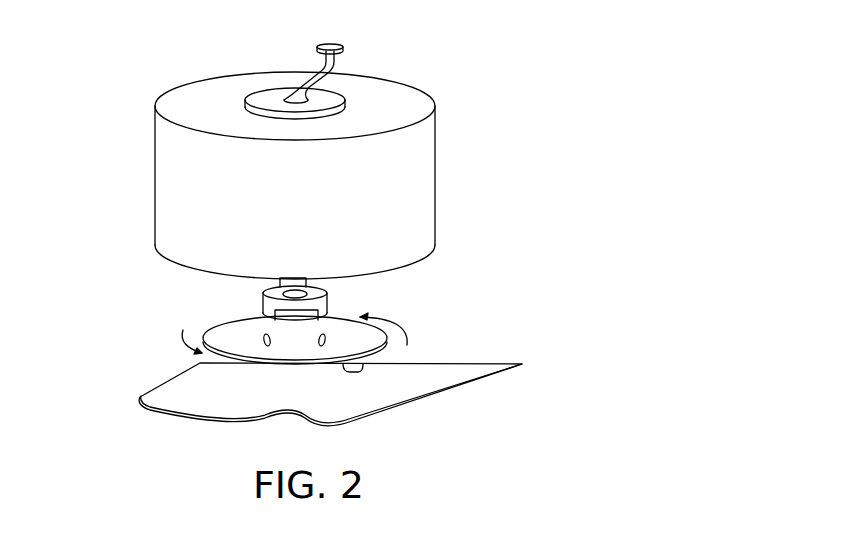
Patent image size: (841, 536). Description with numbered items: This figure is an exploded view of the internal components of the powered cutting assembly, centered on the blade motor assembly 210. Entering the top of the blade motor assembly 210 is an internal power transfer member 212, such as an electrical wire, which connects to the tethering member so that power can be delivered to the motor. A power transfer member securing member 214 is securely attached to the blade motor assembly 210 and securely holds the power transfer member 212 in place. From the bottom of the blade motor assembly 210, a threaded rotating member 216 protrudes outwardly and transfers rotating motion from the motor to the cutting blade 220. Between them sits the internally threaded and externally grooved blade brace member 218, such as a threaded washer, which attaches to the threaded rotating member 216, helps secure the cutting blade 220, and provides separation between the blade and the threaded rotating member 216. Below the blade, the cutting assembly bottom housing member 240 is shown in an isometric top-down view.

The blade motor assembly 210 is at (435, 180).
The internal power transfer member 212 is at (337, 65).
The power transfer member securing member 214 is at (350, 102).
The threaded rotating member 216 is at (303, 280).
The blade brace member 218 is at (265, 297).
The cutting blade 220 is at (370, 338).
The cutting assembly bottom housing member 240 is at (150, 385).